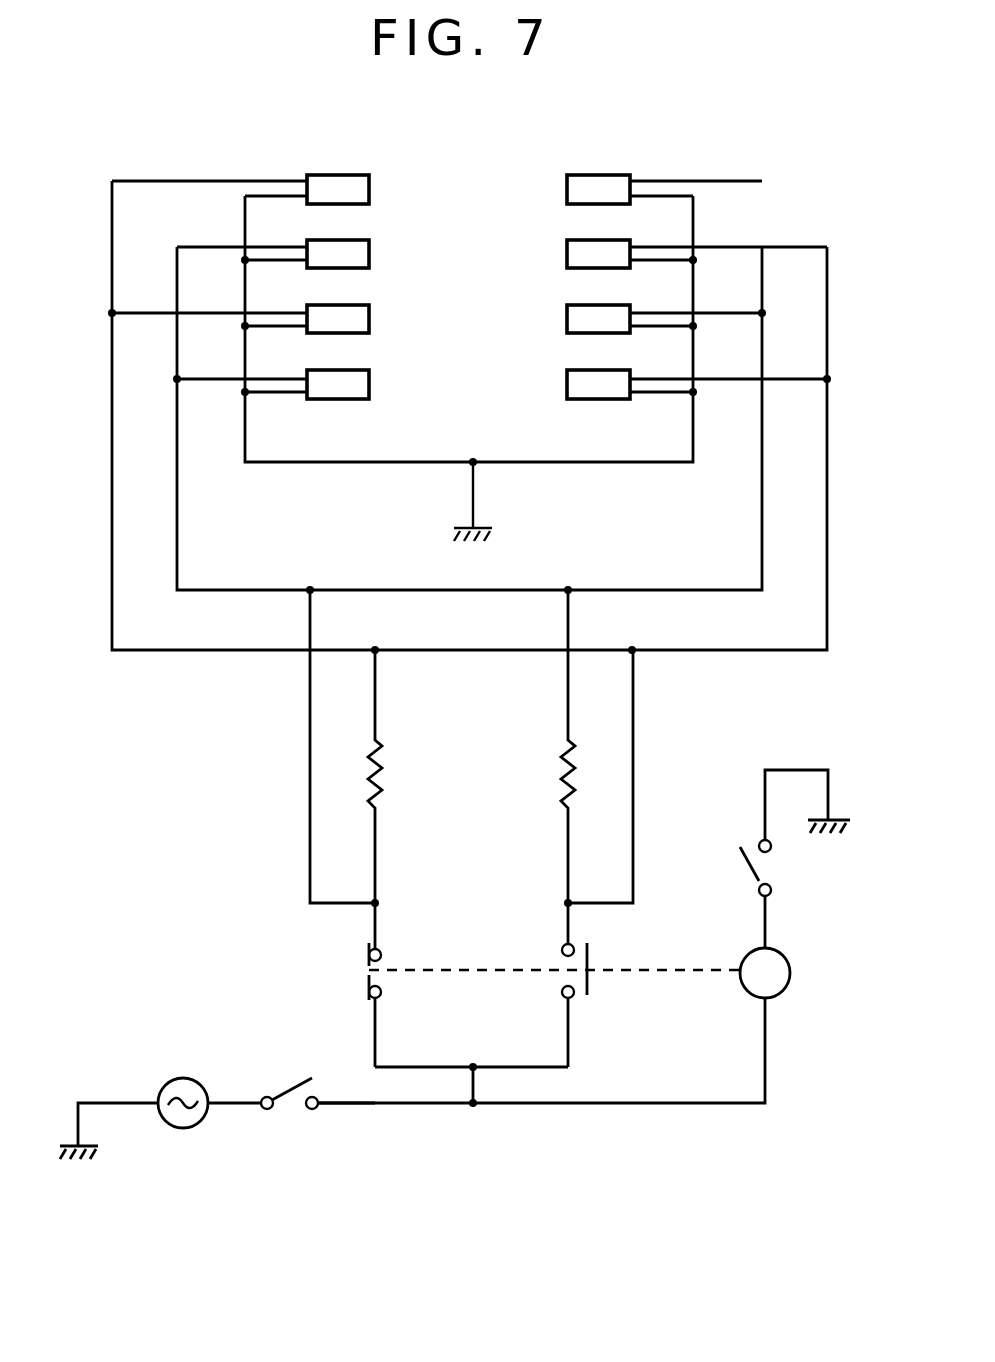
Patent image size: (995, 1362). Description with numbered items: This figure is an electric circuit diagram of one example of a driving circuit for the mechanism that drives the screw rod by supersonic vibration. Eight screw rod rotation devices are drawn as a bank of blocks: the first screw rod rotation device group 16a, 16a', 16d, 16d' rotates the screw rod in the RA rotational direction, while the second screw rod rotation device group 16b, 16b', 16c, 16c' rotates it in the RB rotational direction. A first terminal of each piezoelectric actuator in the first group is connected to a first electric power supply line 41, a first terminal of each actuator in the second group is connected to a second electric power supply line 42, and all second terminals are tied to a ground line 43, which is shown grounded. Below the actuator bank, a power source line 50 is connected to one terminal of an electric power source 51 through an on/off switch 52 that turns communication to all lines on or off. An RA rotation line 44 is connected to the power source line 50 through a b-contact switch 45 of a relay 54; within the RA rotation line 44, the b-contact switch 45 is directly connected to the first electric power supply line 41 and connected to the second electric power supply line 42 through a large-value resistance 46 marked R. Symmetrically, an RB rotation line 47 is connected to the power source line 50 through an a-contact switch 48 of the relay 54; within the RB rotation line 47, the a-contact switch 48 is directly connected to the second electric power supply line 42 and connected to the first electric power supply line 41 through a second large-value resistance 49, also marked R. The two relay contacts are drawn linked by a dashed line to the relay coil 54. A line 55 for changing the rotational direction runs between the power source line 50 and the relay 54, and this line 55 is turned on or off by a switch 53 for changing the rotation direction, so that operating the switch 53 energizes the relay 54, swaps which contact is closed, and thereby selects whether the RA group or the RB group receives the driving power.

The screw rod rotation device 16a is at (614, 162).
The screw rod rotation device 16b is at (647, 235).
The screw rod rotation device 16c is at (276, 162).
The screw rod rotation device 16d is at (309, 235).
The screw rod rotation device 16a' is at (614, 301).
The screw rod rotation device 16b' is at (647, 368).
The screw rod rotation device 16c' is at (280, 300).
The screw rod rotation device 16d' is at (313, 365).
The first electric power supply line 41 is at (178, 528).
The second electric power supply line 42 is at (828, 580).
The ground line 43 is at (366, 463).
The RA rotation line 44 is at (290, 778).
The b-contact switch 45 is at (350, 970).
The resistance 46 is at (392, 806).
The RB rotation line 47 is at (660, 780).
The a-contact switch 48 is at (582, 1004).
The resistance 49 is at (546, 775).
The power source line 50 is at (405, 1104).
The electric power source 51 is at (183, 1128).
The on/off switch 52 is at (288, 1116).
The switch for changing a rotation direction 53 is at (785, 870).
The relay 54 is at (790, 980).
The line for changing a rotational direction 55 is at (660, 1104).